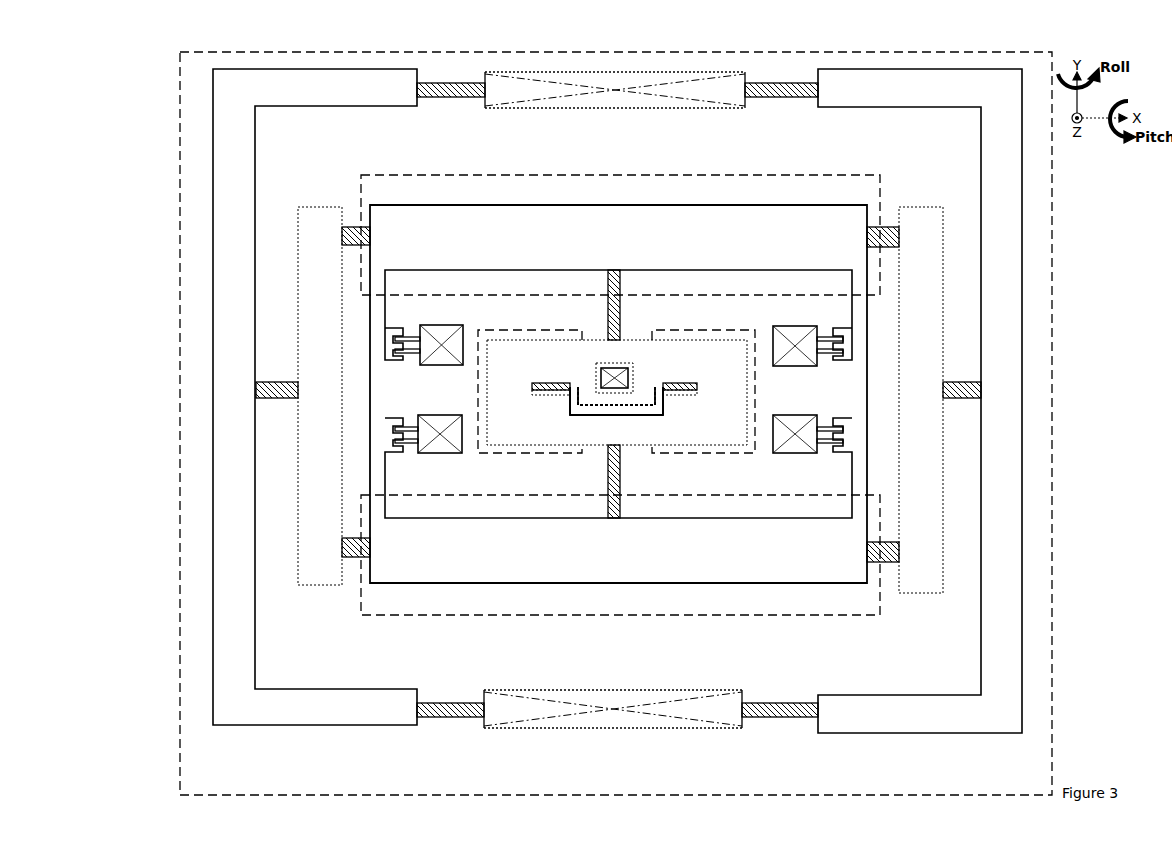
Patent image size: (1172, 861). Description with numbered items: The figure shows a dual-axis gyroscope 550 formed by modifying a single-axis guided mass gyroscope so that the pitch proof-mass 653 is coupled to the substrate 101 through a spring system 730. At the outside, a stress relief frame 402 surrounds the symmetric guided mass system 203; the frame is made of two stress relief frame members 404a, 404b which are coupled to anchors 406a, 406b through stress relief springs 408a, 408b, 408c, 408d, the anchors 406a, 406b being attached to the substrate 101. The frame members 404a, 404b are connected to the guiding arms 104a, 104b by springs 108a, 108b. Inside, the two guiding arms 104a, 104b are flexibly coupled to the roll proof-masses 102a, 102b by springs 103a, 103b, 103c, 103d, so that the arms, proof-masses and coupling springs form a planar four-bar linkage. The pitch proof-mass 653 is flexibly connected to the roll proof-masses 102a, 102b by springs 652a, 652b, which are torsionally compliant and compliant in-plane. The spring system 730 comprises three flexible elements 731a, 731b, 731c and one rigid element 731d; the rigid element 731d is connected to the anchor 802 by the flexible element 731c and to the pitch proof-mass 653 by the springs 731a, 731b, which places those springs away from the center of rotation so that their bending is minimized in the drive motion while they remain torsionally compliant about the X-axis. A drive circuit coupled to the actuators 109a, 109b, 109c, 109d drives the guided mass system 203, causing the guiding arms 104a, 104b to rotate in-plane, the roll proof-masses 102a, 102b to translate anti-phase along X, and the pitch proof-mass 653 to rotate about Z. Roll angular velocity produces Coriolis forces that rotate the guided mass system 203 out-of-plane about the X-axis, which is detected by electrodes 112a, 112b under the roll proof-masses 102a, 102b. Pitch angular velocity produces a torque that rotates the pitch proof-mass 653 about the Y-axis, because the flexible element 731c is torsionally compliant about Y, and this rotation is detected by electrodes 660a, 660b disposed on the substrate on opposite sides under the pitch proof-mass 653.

The substrate 101 is at (845, 55).
The stress relief frame 402 is at (945, 401).
The stress relief frame member 404a is at (212, 375).
The stress relief frame member 404b is at (1026, 392).
The anchor 406a is at (652, 729).
The anchor 406b is at (633, 72).
The stress relief spring 408a is at (450, 717).
The stress relief spring 408b is at (778, 717).
The stress relief spring 408c is at (452, 83).
The stress relief spring 408d is at (772, 83).
The symmetric guided mass system 203 is at (639, 381).
The roll proof-mass 102a is at (805, 585).
The roll proof-mass 102b is at (686, 205).
The spring 103a is at (352, 560).
The spring 103b is at (885, 562).
The spring 103c is at (353, 227).
The spring 103d is at (885, 228).
The guiding arm 104a is at (297, 292).
The guiding arm 104b is at (945, 308).
The spring 108a is at (287, 382).
The spring 108b is at (953, 382).
The electrode 112a is at (508, 616).
The electrode 112b is at (490, 176).
The actuator 109a is at (447, 458).
The actuator 109b is at (799, 458).
The actuator 109c is at (437, 326).
The actuator 109d is at (790, 327).
The spring 652a is at (622, 494).
The spring 652b is at (621, 312).
The pitch proof-mass 653 is at (617, 392).
The electrode 660a is at (478, 378).
The electrode 660b is at (756, 365).
The anchor 802 is at (621, 374).
The spring system 730 is at (616, 413).
The spring 731a is at (553, 390).
The spring 731b is at (680, 392).
The flexible element 731c is at (603, 398).
The rigid element 731d is at (638, 413).
The dual-axis gyroscope 550 is at (618, 616).